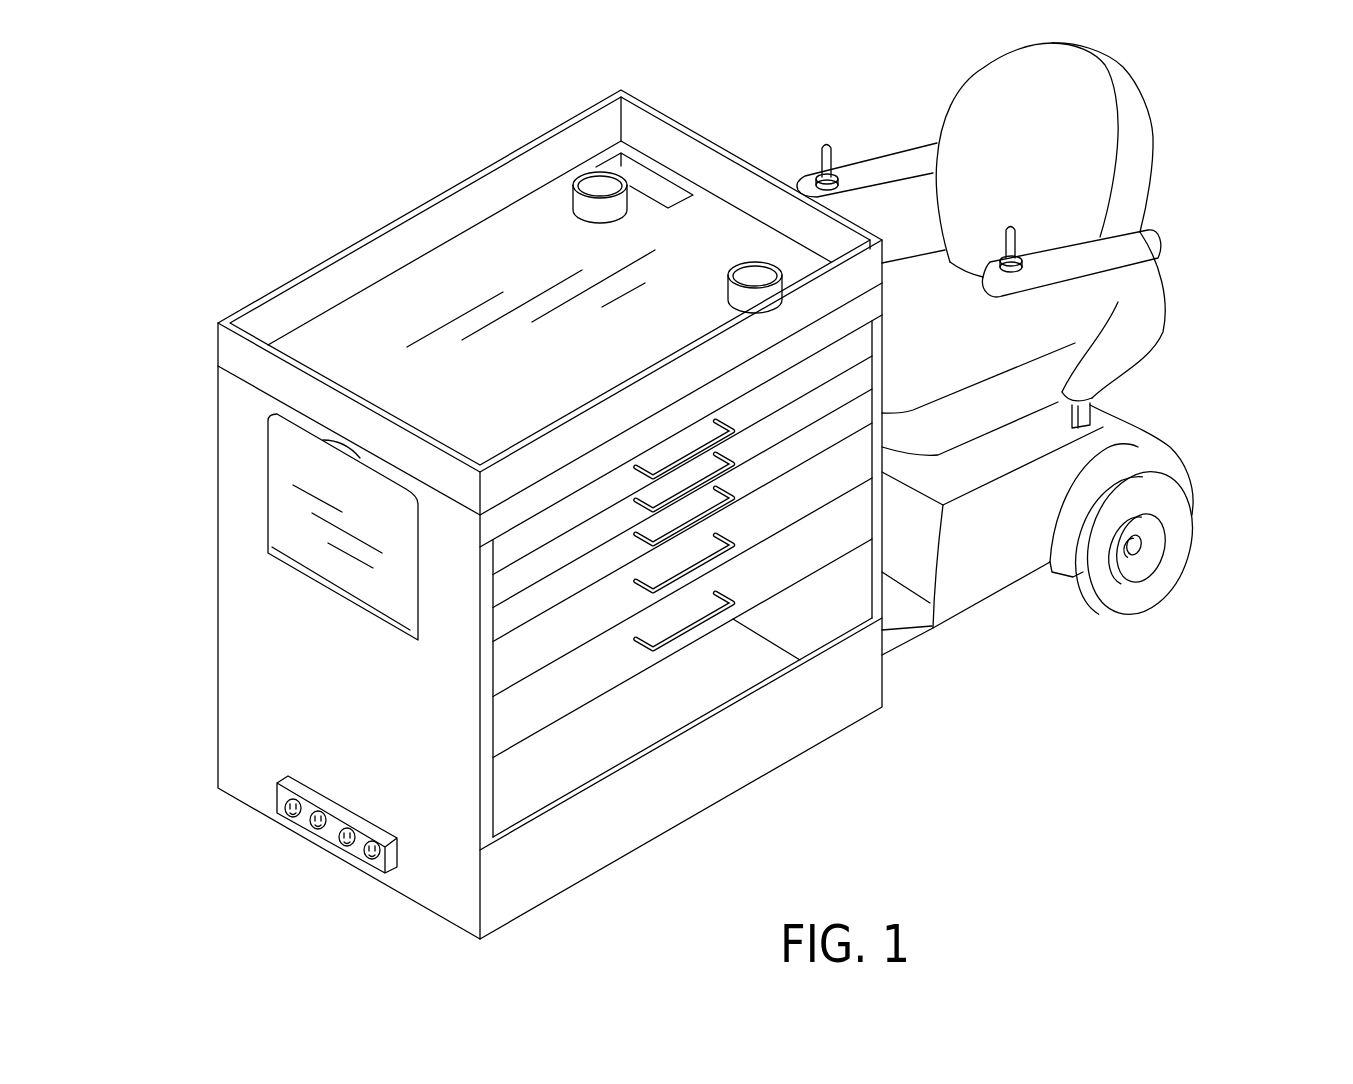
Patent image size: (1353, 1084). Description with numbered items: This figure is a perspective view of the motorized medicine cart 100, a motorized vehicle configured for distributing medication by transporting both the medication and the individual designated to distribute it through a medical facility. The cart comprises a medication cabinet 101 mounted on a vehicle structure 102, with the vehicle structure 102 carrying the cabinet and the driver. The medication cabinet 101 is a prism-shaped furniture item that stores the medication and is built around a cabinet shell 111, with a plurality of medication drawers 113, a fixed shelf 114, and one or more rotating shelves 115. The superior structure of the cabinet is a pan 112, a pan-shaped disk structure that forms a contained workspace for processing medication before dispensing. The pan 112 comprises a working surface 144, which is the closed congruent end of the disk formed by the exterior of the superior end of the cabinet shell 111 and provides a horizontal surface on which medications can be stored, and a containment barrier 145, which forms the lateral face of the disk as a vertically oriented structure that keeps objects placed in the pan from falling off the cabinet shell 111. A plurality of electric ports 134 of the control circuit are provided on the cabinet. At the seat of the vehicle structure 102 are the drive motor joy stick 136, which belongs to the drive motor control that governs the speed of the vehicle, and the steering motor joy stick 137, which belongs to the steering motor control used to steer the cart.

The motorized medicine cart 100 is at (201, 141).
The medication cabinet 101 is at (217, 452).
The vehicle structure 102 is at (1160, 437).
The cabinet shell 111 is at (217, 675).
The pan 112 is at (518, 223).
The medication drawers 113 is at (550, 530).
The fixed shelf 114 is at (730, 665).
The rotating shelf 115 is at (398, 607).
The electric ports 134 is at (357, 853).
The drive motor joy stick 136 is at (837, 148).
The steering motor joy stick 137 is at (1032, 232).
The working surface 144 is at (333, 318).
The containment barrier 145 is at (387, 250).